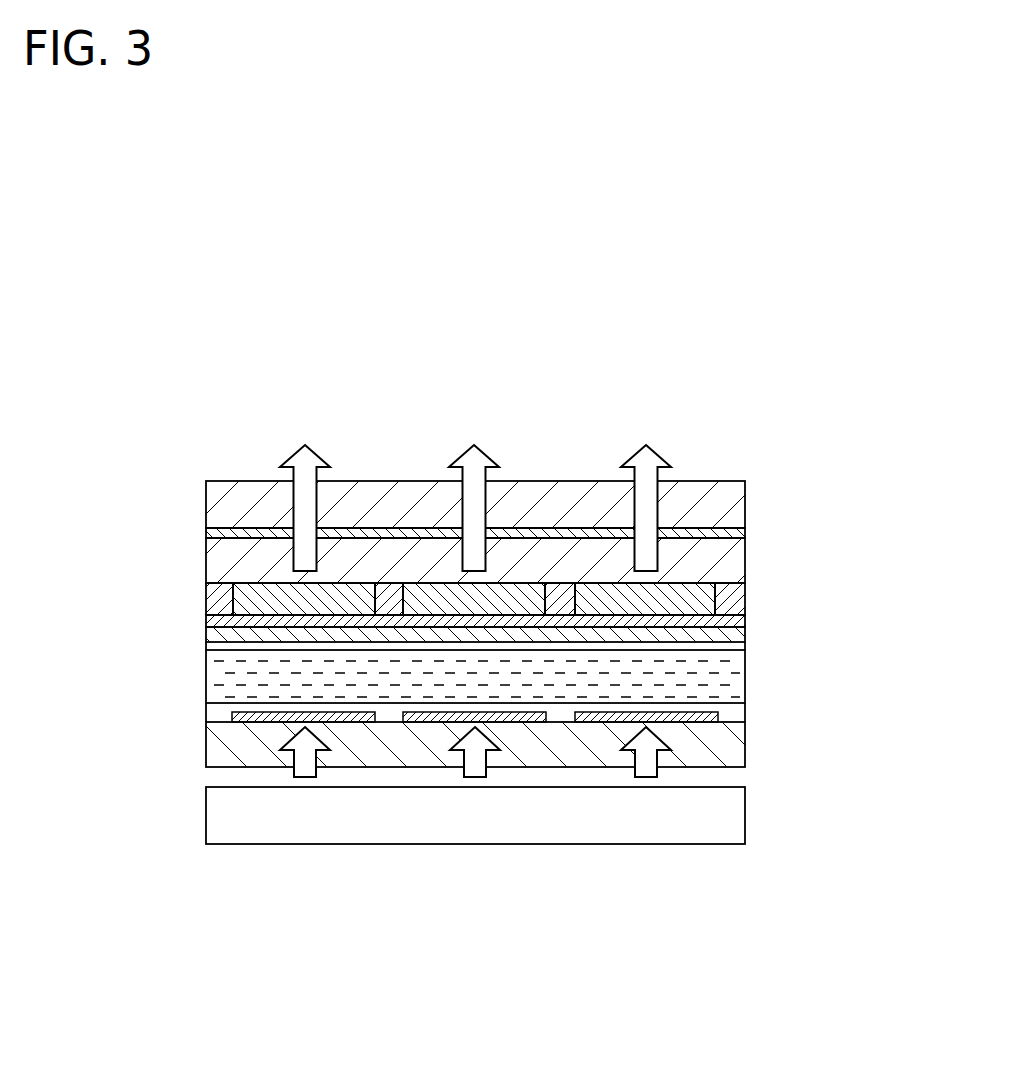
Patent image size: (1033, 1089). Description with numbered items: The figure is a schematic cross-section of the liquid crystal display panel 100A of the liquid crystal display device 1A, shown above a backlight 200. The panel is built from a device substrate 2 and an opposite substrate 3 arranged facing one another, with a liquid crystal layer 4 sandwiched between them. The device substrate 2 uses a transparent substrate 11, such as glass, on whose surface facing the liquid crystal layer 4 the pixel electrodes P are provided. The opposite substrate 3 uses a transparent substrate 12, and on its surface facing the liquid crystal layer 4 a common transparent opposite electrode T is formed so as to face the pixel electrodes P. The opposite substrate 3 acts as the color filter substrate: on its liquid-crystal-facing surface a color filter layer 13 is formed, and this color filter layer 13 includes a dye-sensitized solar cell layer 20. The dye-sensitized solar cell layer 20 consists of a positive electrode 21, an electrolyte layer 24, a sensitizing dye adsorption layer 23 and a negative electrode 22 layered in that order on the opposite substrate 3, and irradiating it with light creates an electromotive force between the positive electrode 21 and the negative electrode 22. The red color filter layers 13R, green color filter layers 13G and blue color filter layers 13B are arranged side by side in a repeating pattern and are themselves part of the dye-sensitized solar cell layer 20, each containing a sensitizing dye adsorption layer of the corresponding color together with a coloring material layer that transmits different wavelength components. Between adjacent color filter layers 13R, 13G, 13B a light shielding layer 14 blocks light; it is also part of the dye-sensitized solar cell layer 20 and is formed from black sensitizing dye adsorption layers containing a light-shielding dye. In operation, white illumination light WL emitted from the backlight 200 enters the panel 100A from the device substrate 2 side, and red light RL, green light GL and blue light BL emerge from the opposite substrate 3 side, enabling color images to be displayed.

The liquid crystal display device 1A is at (730, 410).
The device substrate 2 is at (475, 801).
The opposite substrate 3 is at (482, 615).
The liquid crystal layer 4 is at (206, 680).
The transparent substrate 11 is at (738, 742).
The transparent substrate 12 is at (738, 505).
The color filter layer 13 is at (474, 463).
The red color filter layer 13R is at (265, 595).
The green color filter layer 13G is at (430, 590).
The blue color filter layer 13B is at (634, 484).
The light shielding layer 14 is at (397, 605).
The dye-sensitized solar cell layer 20 is at (538, 615).
The positive electrode 21 is at (738, 533).
The negative electrode 22 is at (514, 628).
The sensitizing dye adsorption layer 23 is at (514, 615).
The electrolyte layer 24 is at (738, 565).
The liquid crystal display panel 100A is at (482, 615).
The backlight 200 is at (738, 812).
The opposite electrode T is at (745, 642).
The pixel electrode P is at (338, 722).
The white illumination light WL is at (326, 766).
The red light RL is at (319, 500).
The green light GL is at (489, 500).
The blue light BL is at (660, 503).